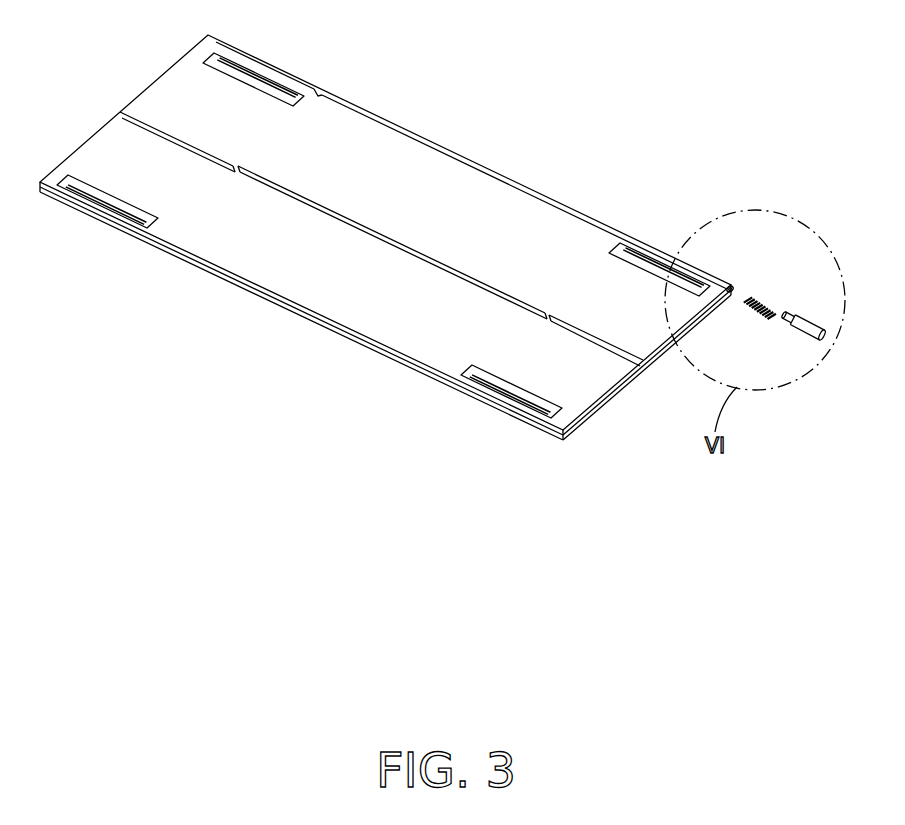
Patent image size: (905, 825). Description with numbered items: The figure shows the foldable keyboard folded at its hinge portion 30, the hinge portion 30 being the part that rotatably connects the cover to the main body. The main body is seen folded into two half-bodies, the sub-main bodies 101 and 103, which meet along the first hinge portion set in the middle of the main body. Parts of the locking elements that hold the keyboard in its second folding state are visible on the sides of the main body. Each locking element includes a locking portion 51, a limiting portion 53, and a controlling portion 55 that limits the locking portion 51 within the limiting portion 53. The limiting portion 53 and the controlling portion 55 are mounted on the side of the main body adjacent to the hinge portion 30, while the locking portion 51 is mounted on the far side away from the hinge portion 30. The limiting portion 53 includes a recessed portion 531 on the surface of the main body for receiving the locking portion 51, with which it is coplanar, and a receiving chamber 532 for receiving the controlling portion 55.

The hinge portion 30 is at (472, 165).
The sub-main body 101 is at (363, 150).
The sub-main body 103 is at (310, 278).
The locking portion 51 is at (508, 392).
The recessed portion 531 is at (627, 253).
The limiting portion 53 is at (665, 232).
The receiving chamber 532 is at (732, 290).
The controlling portion 55 is at (755, 313).